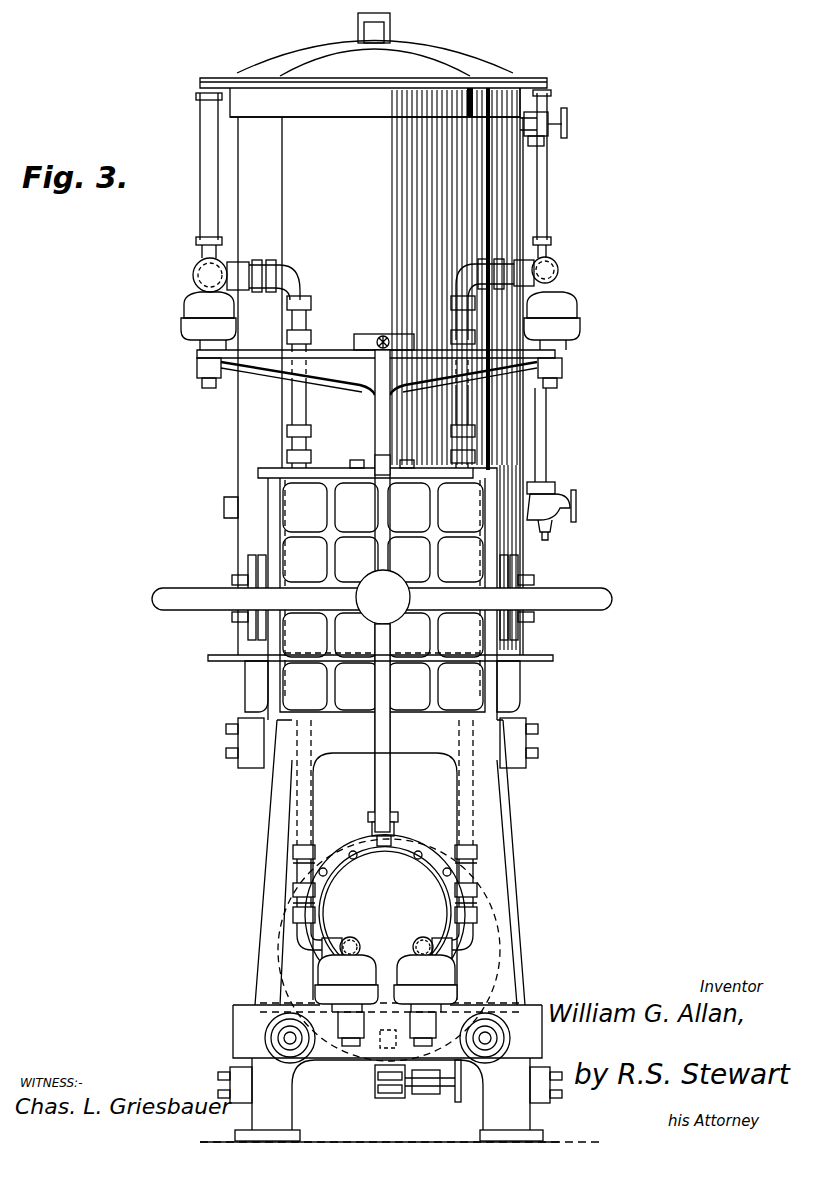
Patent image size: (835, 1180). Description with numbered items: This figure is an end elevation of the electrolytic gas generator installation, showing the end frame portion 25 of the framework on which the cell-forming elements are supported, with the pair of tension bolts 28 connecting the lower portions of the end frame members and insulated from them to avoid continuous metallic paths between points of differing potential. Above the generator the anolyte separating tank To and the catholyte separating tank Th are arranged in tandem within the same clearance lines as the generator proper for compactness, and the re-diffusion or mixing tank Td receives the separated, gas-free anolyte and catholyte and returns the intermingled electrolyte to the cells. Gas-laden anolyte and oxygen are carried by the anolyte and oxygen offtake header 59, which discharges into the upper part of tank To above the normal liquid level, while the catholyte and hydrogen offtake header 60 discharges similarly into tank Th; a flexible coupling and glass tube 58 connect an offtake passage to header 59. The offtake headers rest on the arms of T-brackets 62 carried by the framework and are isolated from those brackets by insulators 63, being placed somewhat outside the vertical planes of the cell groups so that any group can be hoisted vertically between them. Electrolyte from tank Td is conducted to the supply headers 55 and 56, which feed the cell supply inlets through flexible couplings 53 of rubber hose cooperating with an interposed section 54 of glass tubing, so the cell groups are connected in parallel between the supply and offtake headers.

The anolyte separating tank To is at (334, 158).
The catholyte separating tank Th is at (250, 193).
The re-diffusion or mixing tank Td is at (402, 878).
The catholyte and hydrogen offtake header 60 is at (203, 276).
The anolyte and oxygen offtake header 59 is at (557, 276).
The insulators 63 is at (203, 330).
The T-brackets 62 is at (266, 363).
The glass tube 58 is at (478, 399).
The flexible couplings 53 is at (295, 808).
The section of glass tubing 54 is at (310, 867).
The end frame portion 25 is at (490, 862).
The supply header 55 is at (357, 927).
The supply header 56 is at (432, 927).
The tension bolts 28 is at (297, 1048).